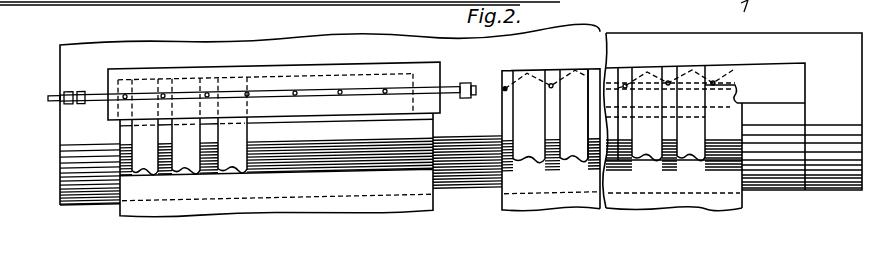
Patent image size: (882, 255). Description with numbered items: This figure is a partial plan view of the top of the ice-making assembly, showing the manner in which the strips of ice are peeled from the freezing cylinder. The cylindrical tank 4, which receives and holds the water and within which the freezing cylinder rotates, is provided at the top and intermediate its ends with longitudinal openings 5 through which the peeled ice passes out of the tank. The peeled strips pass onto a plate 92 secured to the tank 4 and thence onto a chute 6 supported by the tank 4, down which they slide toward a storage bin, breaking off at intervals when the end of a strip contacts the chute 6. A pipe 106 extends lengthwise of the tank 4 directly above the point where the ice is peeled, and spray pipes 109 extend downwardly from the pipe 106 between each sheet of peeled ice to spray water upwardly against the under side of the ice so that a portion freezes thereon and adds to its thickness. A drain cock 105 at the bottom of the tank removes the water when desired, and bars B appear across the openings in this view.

The drain cock 105 is at (66, 3).
The chute 6 is at (420, 135).
The cylindrical tank 4 is at (96, 203).
The bars B is at (418, 120).
The longitudinal openings 5 is at (283, 0).
The plate 92 is at (292, 117).
The pipe 106 is at (229, 91).
The spray pipe 109 is at (125, 90).